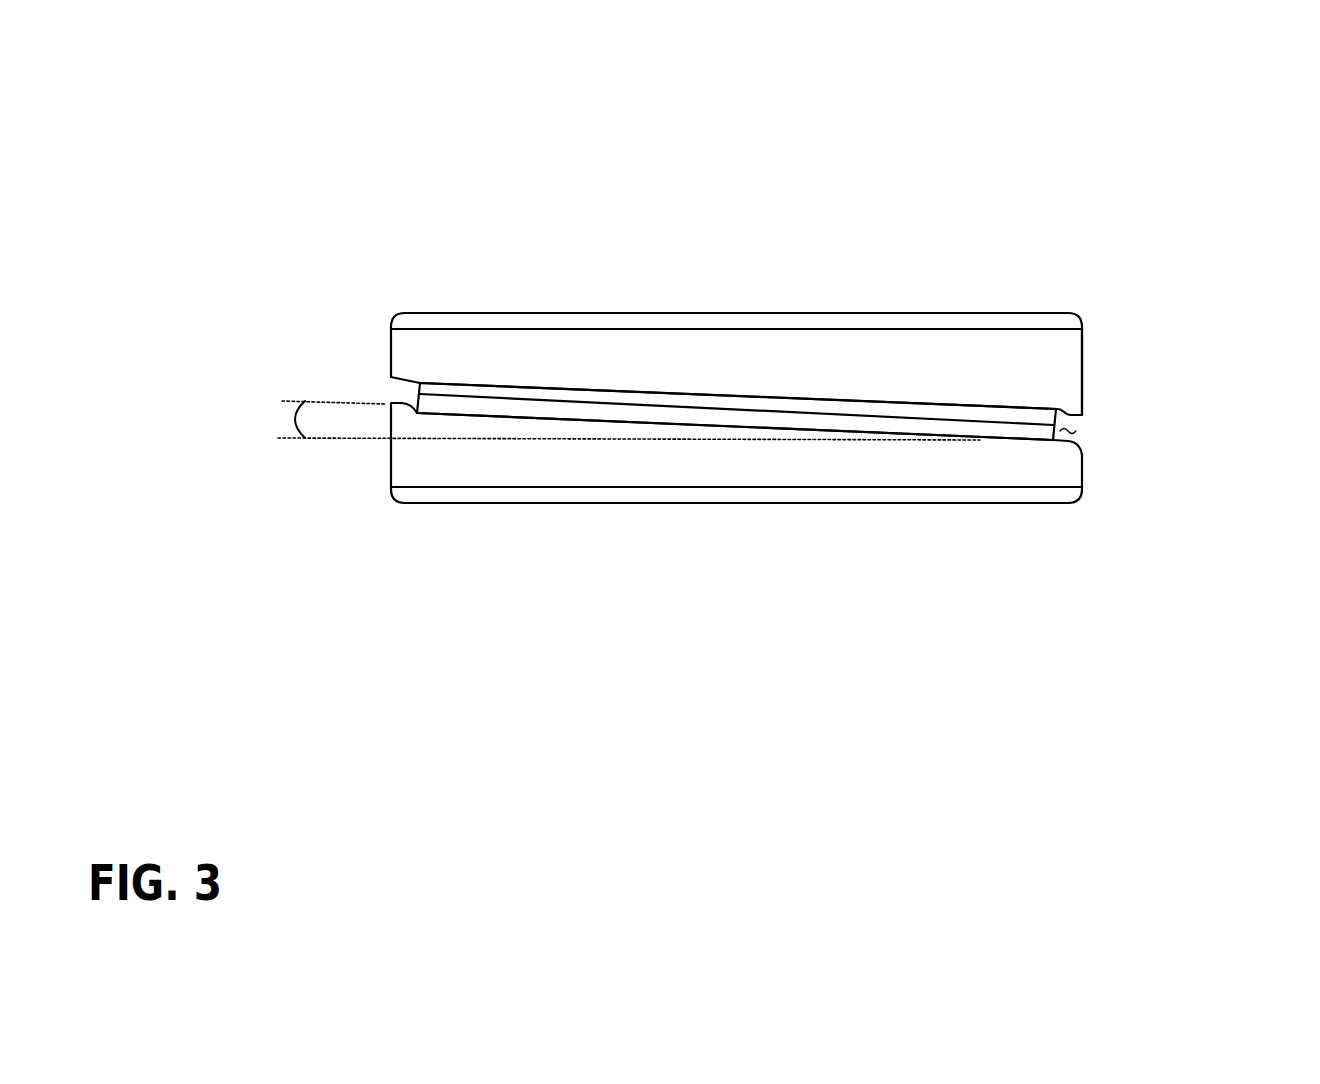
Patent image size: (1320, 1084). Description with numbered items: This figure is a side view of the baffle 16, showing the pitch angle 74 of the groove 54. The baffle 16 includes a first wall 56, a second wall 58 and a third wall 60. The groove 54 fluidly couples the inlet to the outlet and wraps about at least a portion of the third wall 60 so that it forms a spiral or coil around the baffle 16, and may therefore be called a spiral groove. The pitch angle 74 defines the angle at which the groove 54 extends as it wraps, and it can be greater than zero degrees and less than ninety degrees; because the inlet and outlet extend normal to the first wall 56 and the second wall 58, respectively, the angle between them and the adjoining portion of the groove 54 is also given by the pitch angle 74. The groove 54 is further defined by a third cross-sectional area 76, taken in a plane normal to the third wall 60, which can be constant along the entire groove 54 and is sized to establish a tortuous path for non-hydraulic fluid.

The baffle 16 is at (1178, 127).
The groove 54 is at (1083, 410).
The first wall 56 is at (652, 312).
The second wall 58 is at (657, 505).
The third wall 60 is at (1083, 349).
The pitch angle 74 is at (296, 415).
The third cross-sectional area 76 is at (1074, 432).